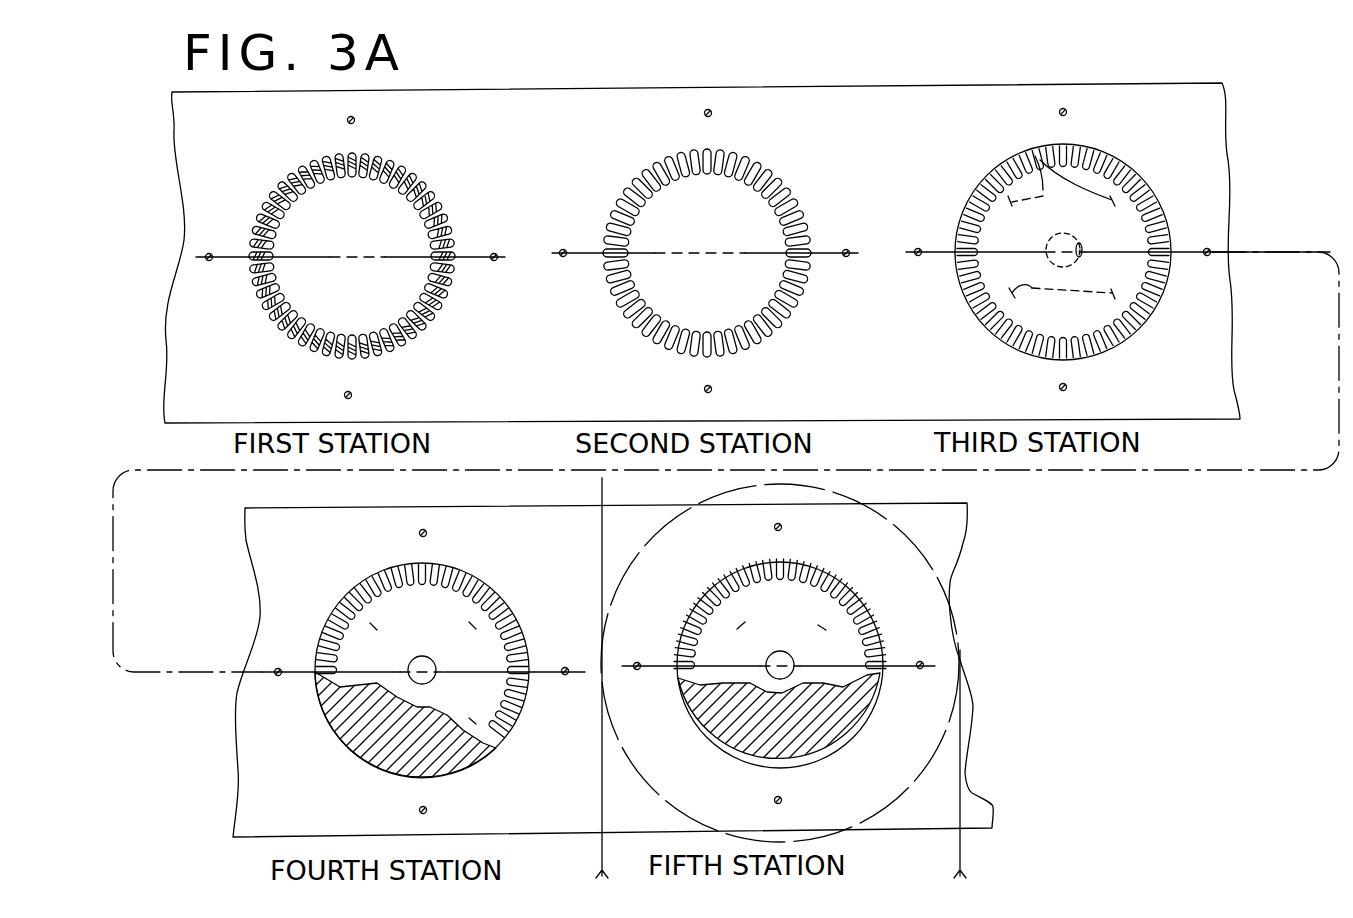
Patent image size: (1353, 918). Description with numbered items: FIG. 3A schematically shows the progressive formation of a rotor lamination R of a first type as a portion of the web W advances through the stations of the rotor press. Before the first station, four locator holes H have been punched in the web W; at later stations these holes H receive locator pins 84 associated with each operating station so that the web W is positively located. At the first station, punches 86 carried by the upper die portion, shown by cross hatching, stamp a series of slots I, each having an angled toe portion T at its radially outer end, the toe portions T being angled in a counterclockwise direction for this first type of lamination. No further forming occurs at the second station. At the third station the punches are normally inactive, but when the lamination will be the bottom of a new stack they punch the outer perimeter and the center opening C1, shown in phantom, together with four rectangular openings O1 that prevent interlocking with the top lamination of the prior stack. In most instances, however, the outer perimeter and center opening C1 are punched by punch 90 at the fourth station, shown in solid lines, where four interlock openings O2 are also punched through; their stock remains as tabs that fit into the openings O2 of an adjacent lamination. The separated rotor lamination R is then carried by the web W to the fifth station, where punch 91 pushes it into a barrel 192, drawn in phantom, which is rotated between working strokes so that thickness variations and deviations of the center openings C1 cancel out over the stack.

The locator pins 84 is at (347, 120).
The punches 86 is at (437, 212).
The punch 90 is at (460, 754).
The punch 91 is at (848, 720).
The winding head circle 192 is at (950, 567).
The web W is at (820, 85).
The locator holes H is at (355, 118).
The slots I is at (639, 307).
The toe portions T is at (368, 590).
The rotor lamination R is at (517, 602).
The rectangular openings O1 is at (1033, 157).
The center opening C1 is at (1080, 257).
The interlock openings O2 is at (472, 625).